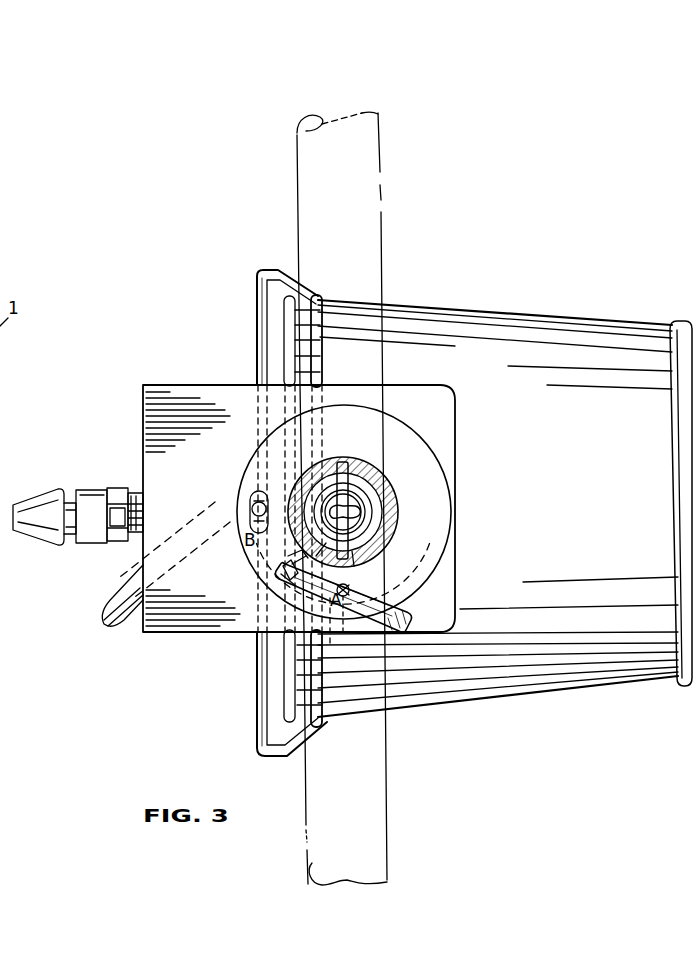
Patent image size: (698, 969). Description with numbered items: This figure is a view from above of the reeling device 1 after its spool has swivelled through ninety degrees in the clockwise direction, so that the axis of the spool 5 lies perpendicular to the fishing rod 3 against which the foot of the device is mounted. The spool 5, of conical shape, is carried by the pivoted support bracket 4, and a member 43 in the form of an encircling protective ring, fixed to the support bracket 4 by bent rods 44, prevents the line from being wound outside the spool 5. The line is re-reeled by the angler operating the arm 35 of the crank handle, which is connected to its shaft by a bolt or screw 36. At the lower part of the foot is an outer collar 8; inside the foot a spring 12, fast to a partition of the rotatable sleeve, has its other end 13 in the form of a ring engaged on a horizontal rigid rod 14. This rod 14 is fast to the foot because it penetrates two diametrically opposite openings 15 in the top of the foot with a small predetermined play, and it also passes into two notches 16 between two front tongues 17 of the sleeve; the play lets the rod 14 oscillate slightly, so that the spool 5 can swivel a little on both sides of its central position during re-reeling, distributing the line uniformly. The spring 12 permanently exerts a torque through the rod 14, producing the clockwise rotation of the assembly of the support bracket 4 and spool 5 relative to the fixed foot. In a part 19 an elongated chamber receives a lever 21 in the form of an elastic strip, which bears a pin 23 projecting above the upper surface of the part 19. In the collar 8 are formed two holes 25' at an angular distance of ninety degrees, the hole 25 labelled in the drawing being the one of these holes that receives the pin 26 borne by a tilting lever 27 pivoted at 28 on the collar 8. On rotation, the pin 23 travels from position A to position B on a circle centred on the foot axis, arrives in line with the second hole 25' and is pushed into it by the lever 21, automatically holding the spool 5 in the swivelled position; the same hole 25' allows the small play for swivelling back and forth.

The reeling device 1 is at (503, 255).
The fishing rod 3 is at (376, 180).
The pivoted support bracket 4 is at (143, 406).
The spool 5 is at (545, 338).
The outer collar 8 is at (438, 458).
The spring 12 is at (380, 488).
The other end of the spring 13 is at (370, 478).
The horizontal rigid rod 14 is at (360, 470).
The openings 15 is at (339, 462).
The notches 16 is at (292, 552).
The front tongues 17 is at (307, 488).
The part 19 is at (186, 396).
The lever 21 is at (110, 628).
The pin 23 is at (238, 504).
The pivot 25 is at (343, 595).
The holes 25' is at (247, 484).
The pin 26 is at (346, 632).
The tilting lever 27 is at (422, 618).
The pivot 28 is at (276, 585).
The arm of crank handle 35 is at (88, 490).
The bolt or screw 36 is at (115, 489).
The encircling ring member 43 is at (322, 298).
The bent rods 44 is at (262, 272).